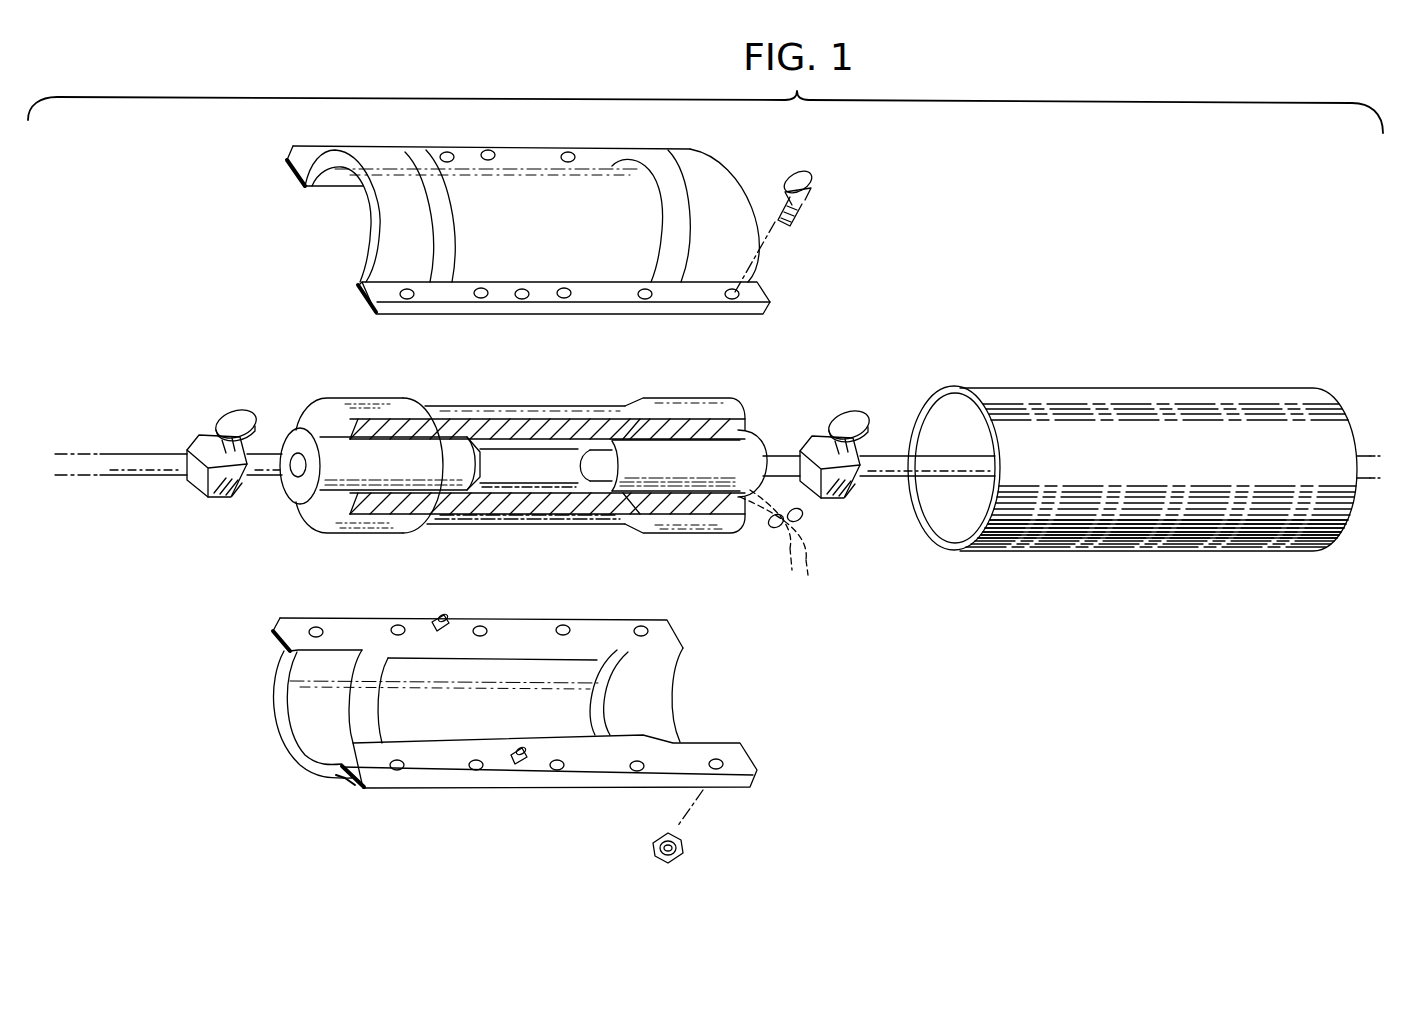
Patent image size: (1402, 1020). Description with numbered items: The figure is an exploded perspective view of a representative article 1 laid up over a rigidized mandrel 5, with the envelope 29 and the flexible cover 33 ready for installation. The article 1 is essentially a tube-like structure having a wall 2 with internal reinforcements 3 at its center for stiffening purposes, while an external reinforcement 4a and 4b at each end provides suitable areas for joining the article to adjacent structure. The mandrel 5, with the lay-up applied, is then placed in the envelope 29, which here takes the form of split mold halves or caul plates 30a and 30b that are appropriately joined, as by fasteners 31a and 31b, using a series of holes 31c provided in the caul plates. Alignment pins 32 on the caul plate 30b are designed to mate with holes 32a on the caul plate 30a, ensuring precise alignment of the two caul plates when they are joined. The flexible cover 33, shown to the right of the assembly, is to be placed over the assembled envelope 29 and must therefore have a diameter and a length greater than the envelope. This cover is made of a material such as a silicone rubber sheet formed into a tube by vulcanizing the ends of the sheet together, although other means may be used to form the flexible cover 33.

The article 1 is at (312, 388).
The wall 2 is at (457, 414).
The internal reinforcements 3 is at (551, 433).
The external reinforcement 4a is at (362, 400).
The external reinforcement 4b is at (716, 400).
The mandrel 5 is at (753, 428).
The envelope 29 is at (258, 167).
The caul plate 30a is at (372, 236).
The caul plate 30b is at (277, 688).
The fastener 31a is at (815, 178).
The fastener 31b is at (685, 848).
The holes 31c is at (650, 297).
The alignment pins 32 is at (441, 616).
The holes 32a is at (496, 156).
The flexible cover 33 is at (1057, 388).